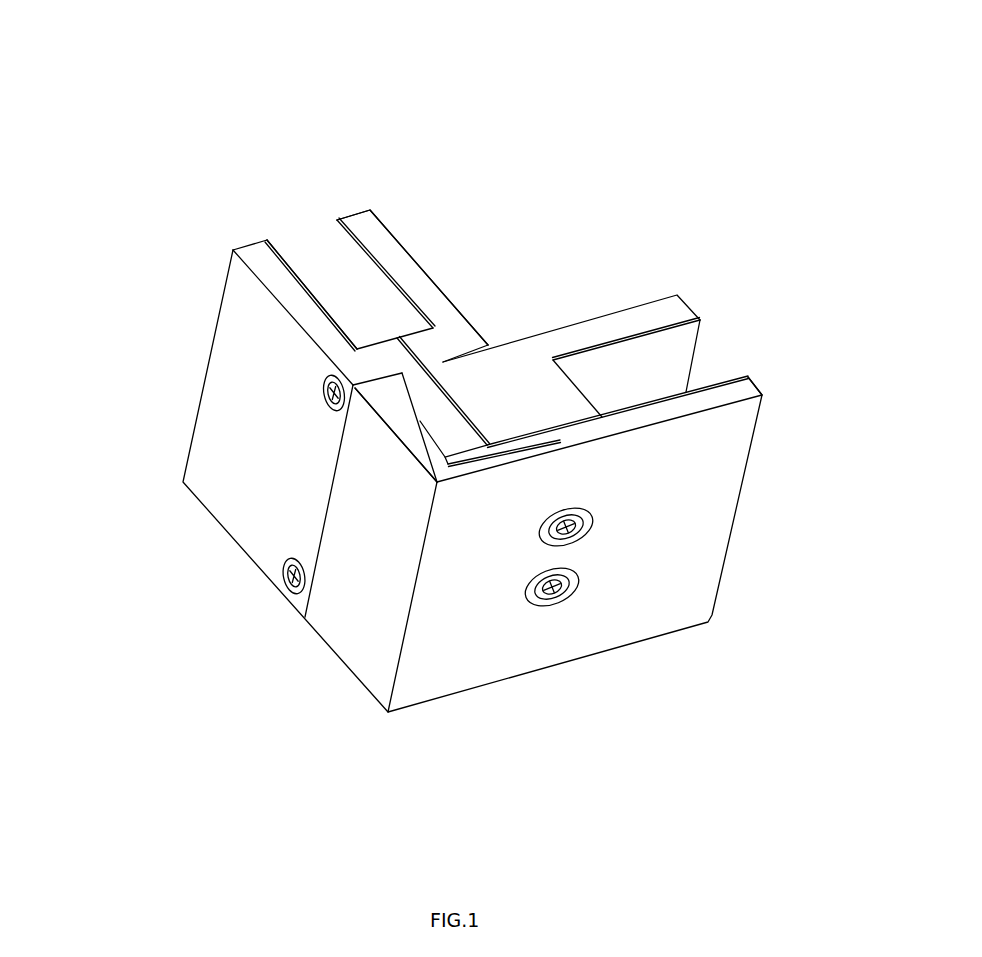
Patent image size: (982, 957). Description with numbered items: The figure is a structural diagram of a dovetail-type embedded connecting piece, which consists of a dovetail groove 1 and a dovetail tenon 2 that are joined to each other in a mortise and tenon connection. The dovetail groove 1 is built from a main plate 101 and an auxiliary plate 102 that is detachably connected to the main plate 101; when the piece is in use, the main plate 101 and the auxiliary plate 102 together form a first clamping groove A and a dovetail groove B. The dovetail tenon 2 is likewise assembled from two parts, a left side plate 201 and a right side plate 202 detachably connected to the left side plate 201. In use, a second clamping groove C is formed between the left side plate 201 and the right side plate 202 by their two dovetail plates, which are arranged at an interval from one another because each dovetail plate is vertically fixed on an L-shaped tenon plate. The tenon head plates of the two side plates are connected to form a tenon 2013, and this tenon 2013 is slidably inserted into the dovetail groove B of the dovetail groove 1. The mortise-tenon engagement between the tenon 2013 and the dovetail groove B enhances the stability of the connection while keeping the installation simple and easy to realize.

The dovetail groove 1 is at (575, 659).
The main plate 101 is at (477, 472).
The auxiliary plate 102 is at (588, 321).
The dovetail tenon 2 is at (403, 247).
The left side plate 201 is at (452, 298).
The right side plate 202 is at (292, 317).
The tenon 2013 is at (443, 362).
The first clamping groove A is at (707, 368).
The dovetail groove B is at (420, 425).
The second clamping groove C is at (310, 248).